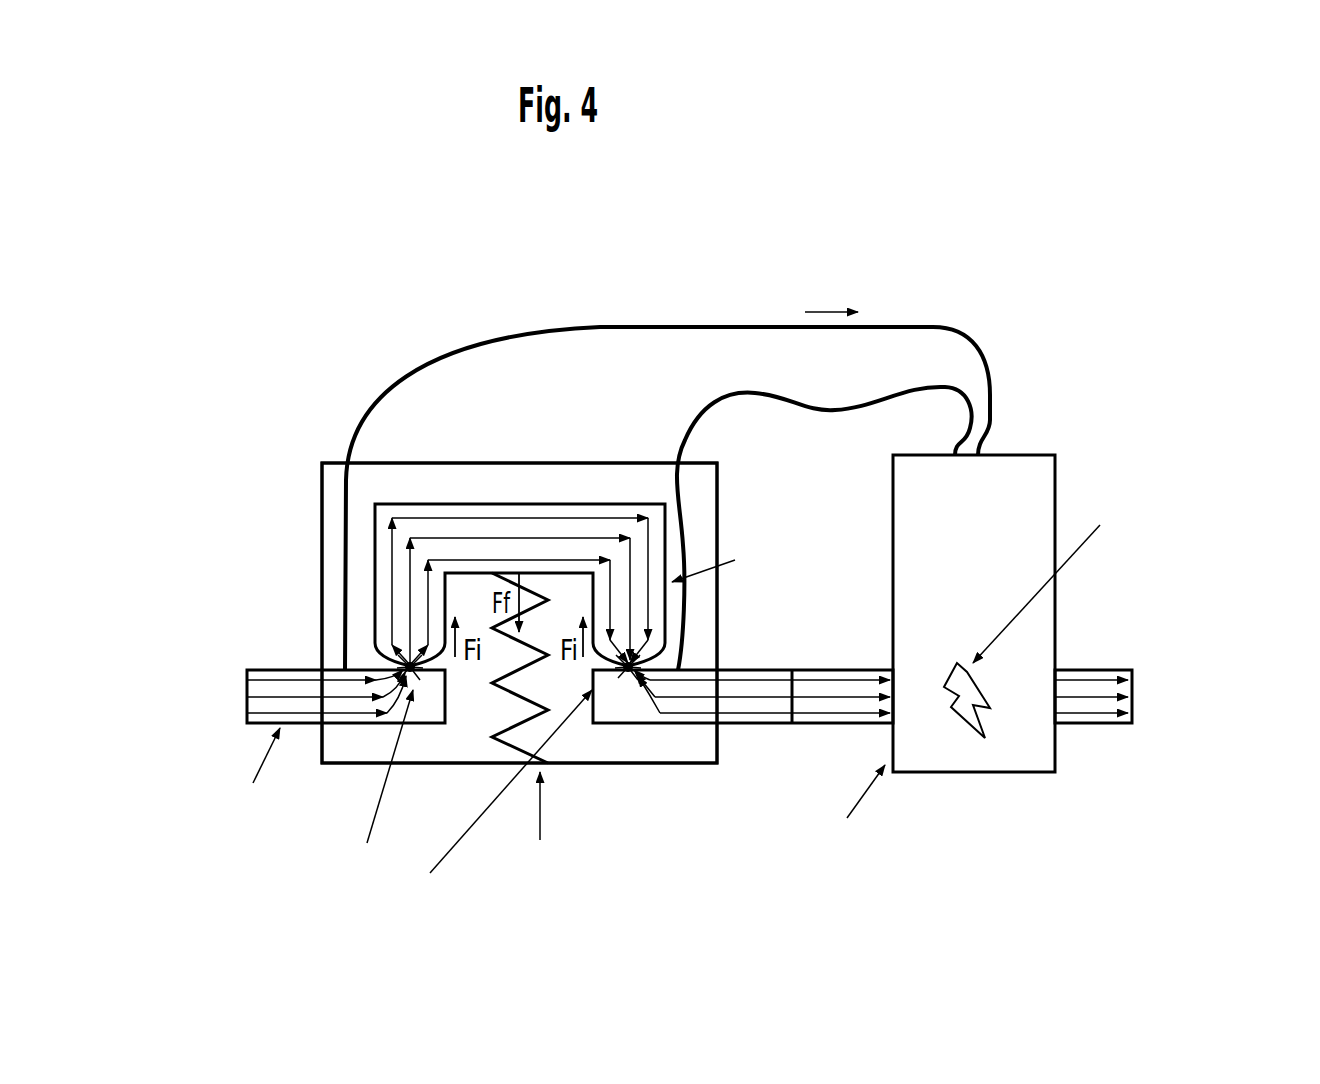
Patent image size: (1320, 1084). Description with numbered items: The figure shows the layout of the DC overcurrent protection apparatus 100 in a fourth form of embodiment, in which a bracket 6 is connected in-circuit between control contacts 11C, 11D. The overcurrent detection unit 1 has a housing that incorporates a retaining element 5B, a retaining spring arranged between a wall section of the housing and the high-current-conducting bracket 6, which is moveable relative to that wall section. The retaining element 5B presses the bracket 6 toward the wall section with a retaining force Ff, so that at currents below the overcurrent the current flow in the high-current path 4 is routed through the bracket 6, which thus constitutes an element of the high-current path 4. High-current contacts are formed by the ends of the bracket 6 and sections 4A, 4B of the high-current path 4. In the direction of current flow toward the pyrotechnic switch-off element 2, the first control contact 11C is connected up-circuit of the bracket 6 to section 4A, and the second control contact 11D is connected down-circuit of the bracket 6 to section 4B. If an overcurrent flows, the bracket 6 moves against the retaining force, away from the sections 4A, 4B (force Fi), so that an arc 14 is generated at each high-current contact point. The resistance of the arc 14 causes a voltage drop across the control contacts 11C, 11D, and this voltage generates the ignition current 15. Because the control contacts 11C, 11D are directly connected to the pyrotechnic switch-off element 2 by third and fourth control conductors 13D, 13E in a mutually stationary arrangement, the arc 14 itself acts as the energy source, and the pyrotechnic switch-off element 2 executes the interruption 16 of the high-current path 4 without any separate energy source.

The DC overcurrent protection apparatus 100 is at (352, 310).
The overcurrent detection unit 1 is at (705, 487).
The pyrotechnic switch-off element 2 is at (989, 562).
The high-current path 4 is at (837, 668).
The section of the high-current path 4A is at (420, 700).
The section of the high-current path 4B is at (630, 710).
The retaining element 5B is at (525, 727).
The bracket 6 is at (517, 508).
The first control contact 11C is at (343, 668).
The second control contact 11D is at (679, 668).
The third control conductor 13D is at (601, 327).
The fourth control conductor 13E is at (823, 410).
The arc 14 is at (423, 668).
The ignition current 15 is at (825, 312).
The interruption 16 is at (970, 698).